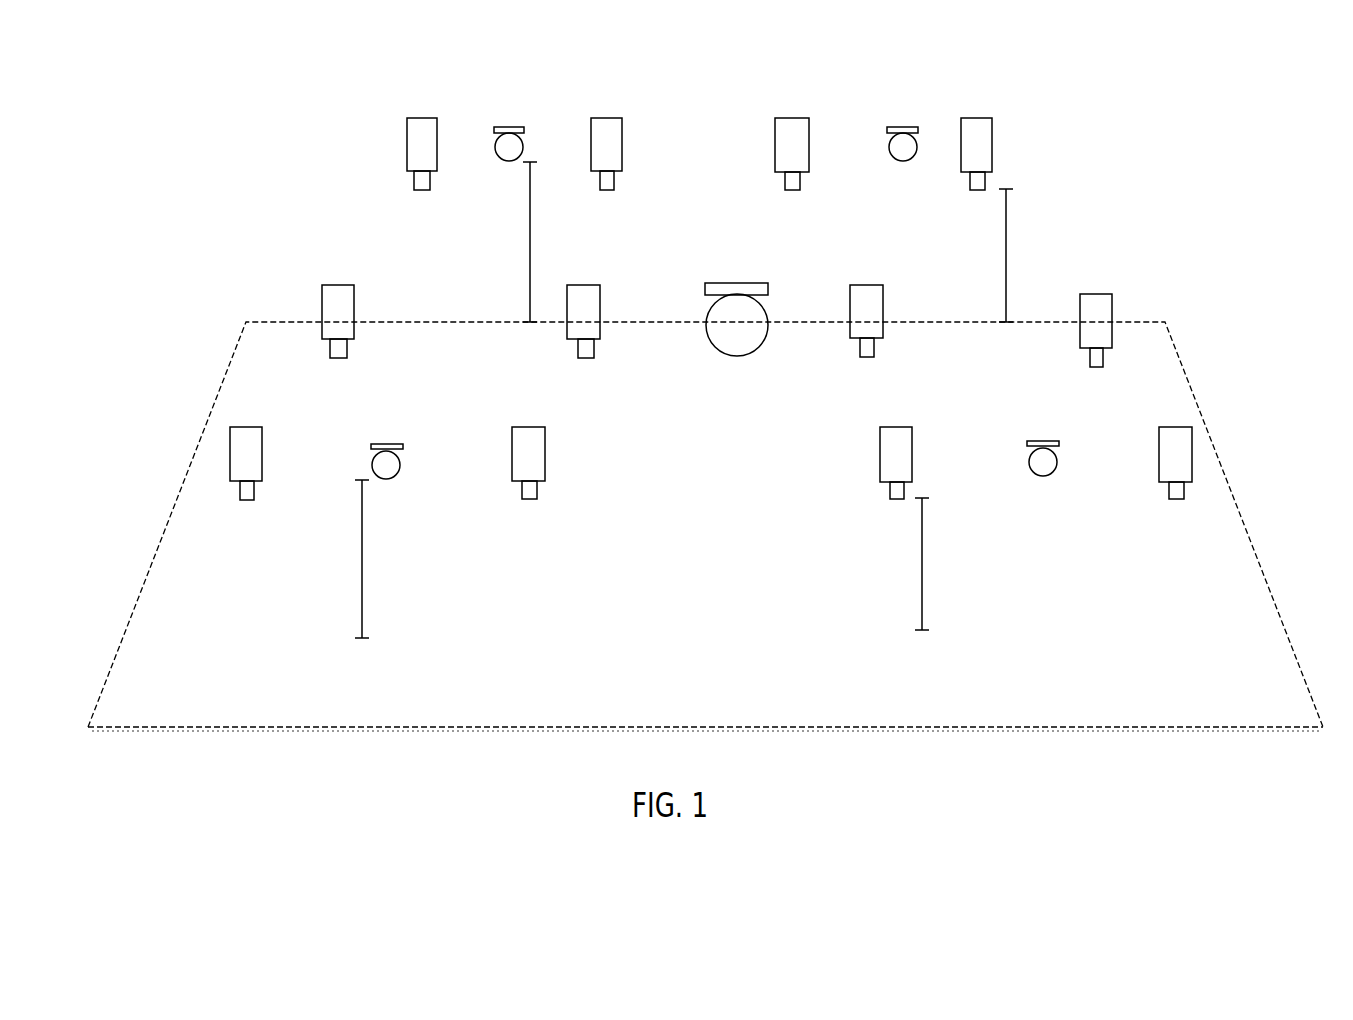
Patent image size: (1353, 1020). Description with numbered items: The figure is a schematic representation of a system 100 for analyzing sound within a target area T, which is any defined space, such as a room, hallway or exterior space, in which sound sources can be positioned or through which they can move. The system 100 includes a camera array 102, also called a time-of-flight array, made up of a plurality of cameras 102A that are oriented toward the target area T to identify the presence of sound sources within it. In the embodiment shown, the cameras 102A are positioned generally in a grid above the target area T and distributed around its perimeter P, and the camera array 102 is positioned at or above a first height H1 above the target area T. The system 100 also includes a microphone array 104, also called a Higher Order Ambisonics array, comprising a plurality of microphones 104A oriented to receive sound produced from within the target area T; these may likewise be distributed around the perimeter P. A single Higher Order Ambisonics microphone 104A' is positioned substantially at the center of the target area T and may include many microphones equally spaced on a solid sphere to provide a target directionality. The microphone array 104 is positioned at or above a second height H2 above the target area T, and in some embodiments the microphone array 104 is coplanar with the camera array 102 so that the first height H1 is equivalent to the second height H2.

The system 100 is at (240, 196).
The camera array 102 is at (711, 274).
The cameras 102A is at (418, 118).
The microphone array 104 is at (743, 320).
The microphones 104A is at (715, 267).
The Higher Order Ambisonics microphone 104A' is at (743, 256).
The first height H1 is at (1008, 221).
The second height H2 is at (528, 244).
The perimeter P is at (232, 366).
The target area T is at (138, 648).